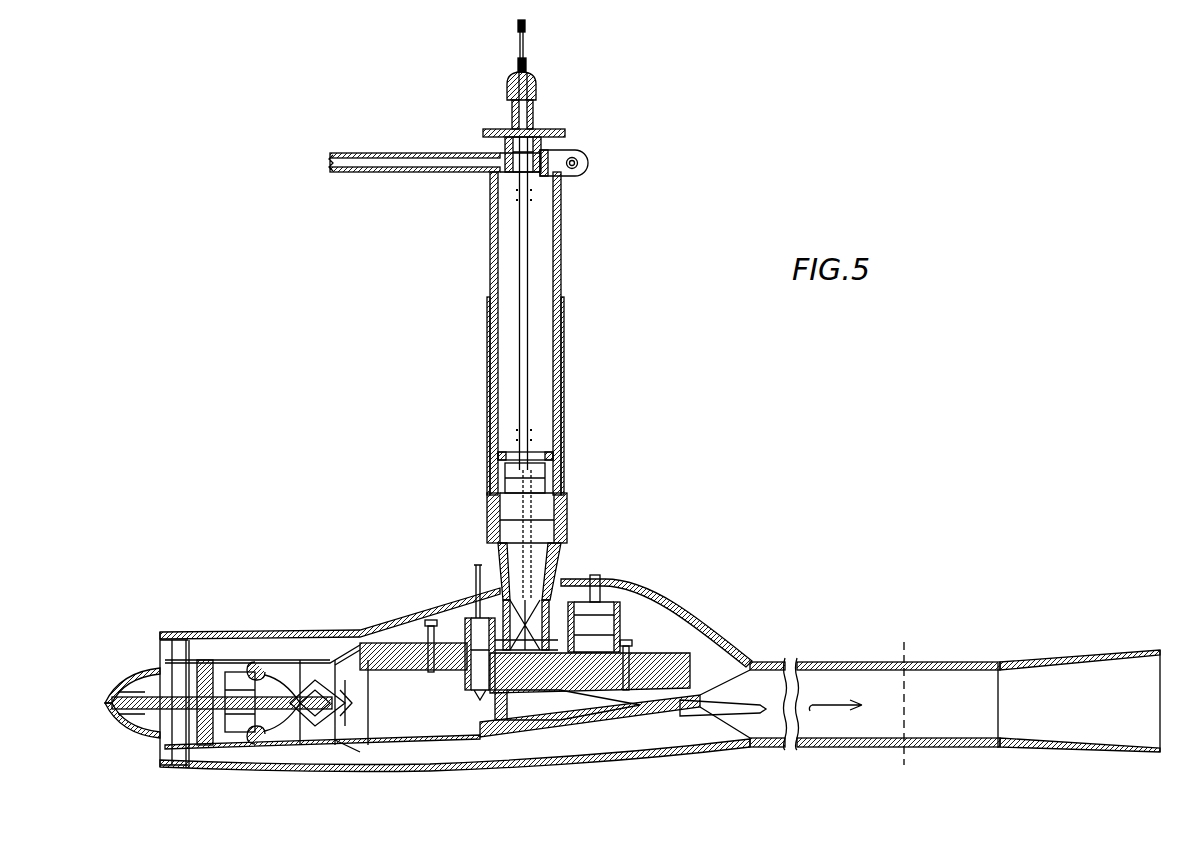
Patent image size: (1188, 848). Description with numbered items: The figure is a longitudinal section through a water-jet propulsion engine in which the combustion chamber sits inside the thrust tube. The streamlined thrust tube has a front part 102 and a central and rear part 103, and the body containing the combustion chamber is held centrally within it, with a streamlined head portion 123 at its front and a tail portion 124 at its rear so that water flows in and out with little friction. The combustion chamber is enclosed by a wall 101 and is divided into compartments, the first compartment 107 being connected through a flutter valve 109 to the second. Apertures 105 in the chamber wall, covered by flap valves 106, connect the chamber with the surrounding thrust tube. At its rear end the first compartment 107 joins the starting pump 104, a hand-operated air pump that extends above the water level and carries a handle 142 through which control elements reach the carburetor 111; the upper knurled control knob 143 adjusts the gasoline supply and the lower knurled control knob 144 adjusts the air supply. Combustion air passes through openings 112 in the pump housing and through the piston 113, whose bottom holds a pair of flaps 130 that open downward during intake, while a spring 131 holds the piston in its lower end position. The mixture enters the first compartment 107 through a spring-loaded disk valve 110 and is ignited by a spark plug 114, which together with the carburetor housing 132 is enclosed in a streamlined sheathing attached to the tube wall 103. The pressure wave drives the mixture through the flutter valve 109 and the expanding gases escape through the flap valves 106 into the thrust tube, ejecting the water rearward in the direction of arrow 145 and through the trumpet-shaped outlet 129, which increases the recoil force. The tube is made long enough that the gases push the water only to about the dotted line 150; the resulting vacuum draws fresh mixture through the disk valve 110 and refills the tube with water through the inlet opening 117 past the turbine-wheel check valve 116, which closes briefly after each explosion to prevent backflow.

The combustion chamber wall 101 is at (333, 656).
The front part of thrust tube 102 is at (233, 633).
The central and rear part of thrust tube 103 is at (385, 771).
The starting pump 104 is at (563, 268).
The apertures 105 is at (262, 660).
The flap valves 106 is at (237, 760).
The first compartment 107 is at (404, 714).
The flutter valve 109 is at (332, 760).
The disk valve 110 is at (494, 712).
The carburetor 111 is at (478, 590).
The openings 112 is at (505, 150).
The piston 113 is at (554, 456).
The spark plug 114 is at (470, 676).
The check valve 116 is at (200, 650).
The inlet opening 117 is at (160, 655).
The head portion 123 is at (133, 732).
The tail portion 124 is at (655, 736).
The trumpet-shaped outlet 129 is at (1092, 655).
The flaps 130 is at (546, 473).
The spring 131 is at (519, 192).
The carburetor housing 132 is at (616, 609).
The handle 142 is at (536, 101).
The upper knurled control knob 143 is at (532, 30).
The lower knurled control knob 144 is at (528, 69).
The exhaust flow direction 145 is at (835, 715).
The dotted line 150 is at (912, 718).